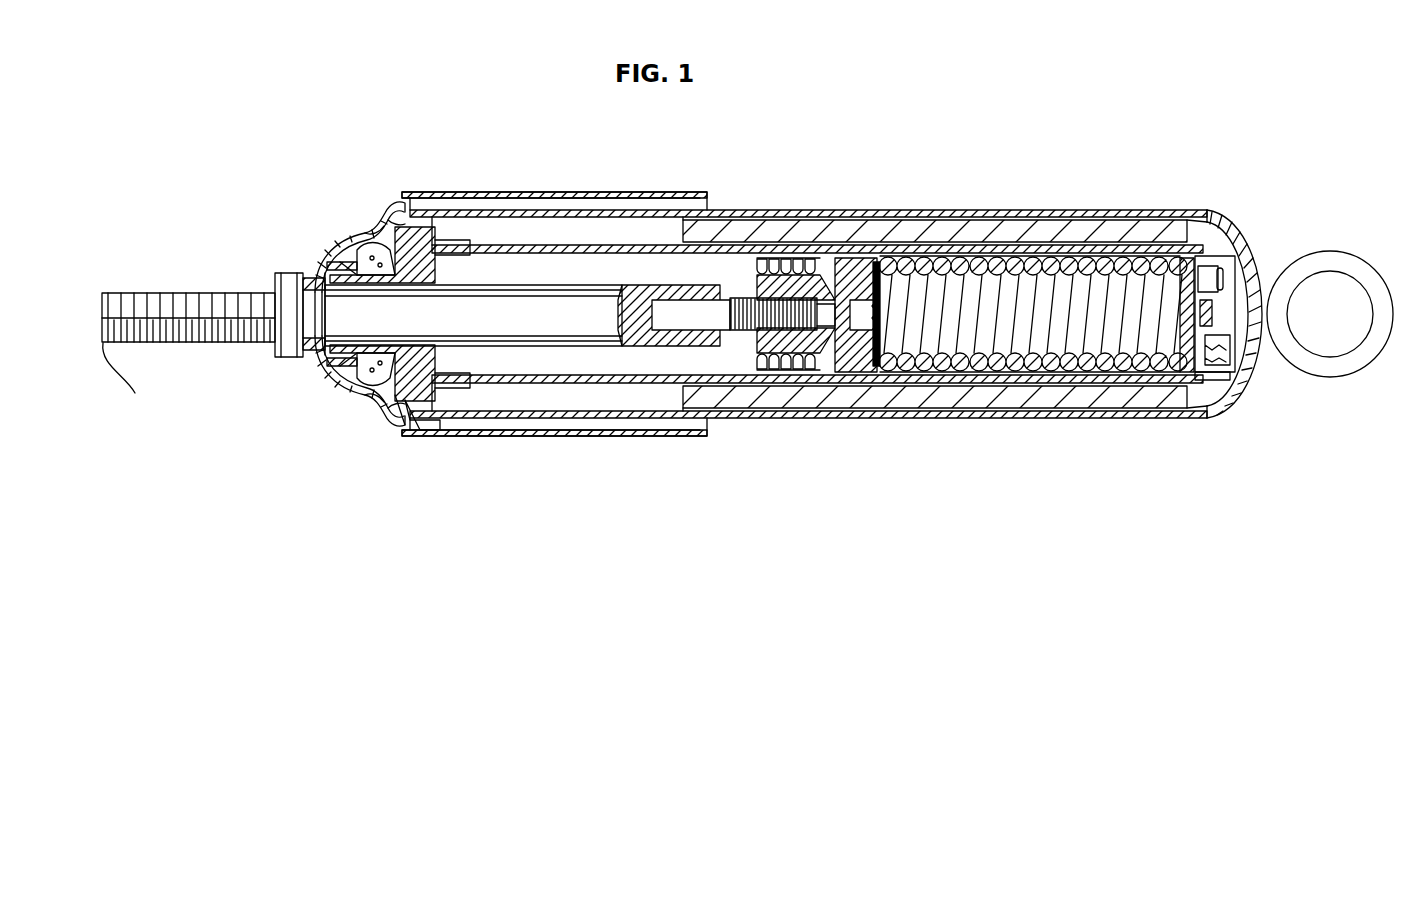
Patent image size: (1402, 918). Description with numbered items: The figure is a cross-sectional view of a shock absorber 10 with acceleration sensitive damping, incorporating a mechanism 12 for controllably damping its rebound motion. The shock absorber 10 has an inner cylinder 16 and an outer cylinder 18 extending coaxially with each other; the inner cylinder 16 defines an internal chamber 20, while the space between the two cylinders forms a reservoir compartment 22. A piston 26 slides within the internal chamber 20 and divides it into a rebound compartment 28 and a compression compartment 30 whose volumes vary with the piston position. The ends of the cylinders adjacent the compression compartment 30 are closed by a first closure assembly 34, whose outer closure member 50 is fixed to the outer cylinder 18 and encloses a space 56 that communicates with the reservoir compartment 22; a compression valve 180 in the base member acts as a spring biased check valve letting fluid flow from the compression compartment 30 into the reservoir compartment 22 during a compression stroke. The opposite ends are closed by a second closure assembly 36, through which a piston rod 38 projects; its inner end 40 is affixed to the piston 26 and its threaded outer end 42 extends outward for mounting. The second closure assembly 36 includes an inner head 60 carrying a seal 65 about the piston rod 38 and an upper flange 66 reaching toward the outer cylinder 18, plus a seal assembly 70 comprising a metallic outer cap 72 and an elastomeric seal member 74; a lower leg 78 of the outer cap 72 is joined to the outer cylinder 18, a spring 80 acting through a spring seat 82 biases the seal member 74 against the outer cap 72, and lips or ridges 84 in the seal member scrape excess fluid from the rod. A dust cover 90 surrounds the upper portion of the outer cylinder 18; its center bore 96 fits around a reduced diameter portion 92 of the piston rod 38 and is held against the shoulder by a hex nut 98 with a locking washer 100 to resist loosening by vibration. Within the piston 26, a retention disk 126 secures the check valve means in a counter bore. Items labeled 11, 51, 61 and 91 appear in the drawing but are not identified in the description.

The shock absorber 10 is at (817, 147).
The mounting ring 11 is at (1316, 254).
The mechanism 12 is at (742, 224).
The inner cylinder 16 is at (653, 245).
The outer cylinder 18 is at (613, 213).
The internal chamber 20 is at (685, 226).
The reservoir compartment 22 is at (585, 195).
The piston 26 is at (885, 255).
The rebound compartment 28 is at (512, 252).
The compression compartment 30 is at (992, 243).
The first closure assembly 34 is at (1213, 212).
The second closure assembly 36 is at (331, 395).
The piston rod 38 is at (600, 346).
The inner end 40 is at (735, 340).
The outer end 42 is at (135, 377).
The outer closure member 50 is at (1234, 236).
The base valve 51 is at (1210, 418).
The space 56 is at (1240, 332).
The inner head 60 is at (440, 228).
The rod guide bushing 61 is at (478, 240).
The seal 65 is at (432, 434).
The upper flange 66 is at (428, 420).
The seal assembly 70 is at (322, 248).
The outer cap 72 is at (336, 238).
The seal member 74 is at (350, 234).
The lower leg 78 is at (380, 228).
The spring 80 is at (376, 398).
The spring seat 82 is at (362, 396).
The lips or ridges 84 is at (330, 262).
The dust cover 90 is at (598, 440).
The nut 91 is at (297, 272).
The reduced diameter portion 92 is at (178, 293).
The center bore 96 is at (300, 346).
The hex nut 98 is at (312, 352).
The locking washer 100 is at (318, 372).
The retention disk 126 is at (1243, 377).
The compression valve 180 is at (1224, 282).